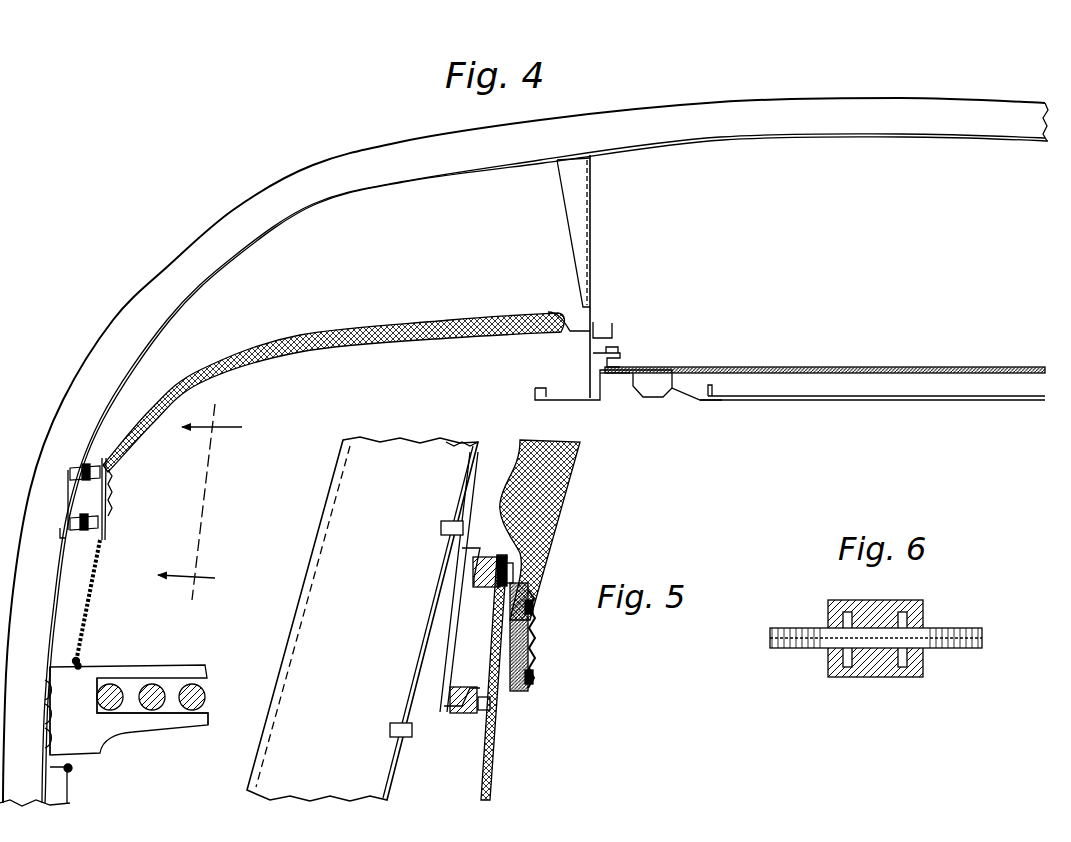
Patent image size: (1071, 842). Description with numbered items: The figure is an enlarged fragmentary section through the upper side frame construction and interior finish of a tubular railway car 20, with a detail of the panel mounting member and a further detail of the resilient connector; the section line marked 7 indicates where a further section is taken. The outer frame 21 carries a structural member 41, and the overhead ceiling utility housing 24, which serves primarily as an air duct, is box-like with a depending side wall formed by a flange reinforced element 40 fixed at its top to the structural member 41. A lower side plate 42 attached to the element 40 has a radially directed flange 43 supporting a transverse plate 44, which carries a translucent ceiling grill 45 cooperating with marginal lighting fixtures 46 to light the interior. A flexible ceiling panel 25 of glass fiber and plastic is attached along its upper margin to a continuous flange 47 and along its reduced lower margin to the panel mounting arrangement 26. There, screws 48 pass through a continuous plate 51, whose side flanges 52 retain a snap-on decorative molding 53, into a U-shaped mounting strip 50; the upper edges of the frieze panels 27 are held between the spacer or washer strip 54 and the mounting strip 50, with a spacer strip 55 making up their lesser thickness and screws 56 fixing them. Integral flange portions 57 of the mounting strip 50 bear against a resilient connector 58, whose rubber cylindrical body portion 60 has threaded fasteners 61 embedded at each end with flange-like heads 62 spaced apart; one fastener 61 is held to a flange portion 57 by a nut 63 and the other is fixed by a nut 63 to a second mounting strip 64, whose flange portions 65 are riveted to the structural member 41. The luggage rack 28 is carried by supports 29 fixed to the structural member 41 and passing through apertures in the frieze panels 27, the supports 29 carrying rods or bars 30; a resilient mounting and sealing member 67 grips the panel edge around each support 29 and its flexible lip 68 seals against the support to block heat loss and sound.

In FIG. 4, the section line 7- 7 is at (204, 502).
In FIG. 4, the tubular railway car 20 is at (813, 100).
In FIG. 4, the outer frame 21 is at (338, 172).
In FIG. 5, the outer frame 21 is at (344, 468).
In FIG. 4, the ceiling utility housing 24 is at (838, 178).
In FIG. 4, the flexible ceiling panel 25 is at (366, 319).
In FIG. 5, the flexible ceiling panel 25 is at (566, 454).
In FIG. 4, the panel mounting arrangement 26 is at (132, 494).
In FIG. 5, the panel mounting arrangement 26 is at (540, 645).
In FIG. 4, the frieze panels 27 is at (92, 592).
In FIG. 5, the frieze panels 27 is at (492, 758).
In FIG. 4, the luggage rack 28 is at (147, 655).
In FIG. 4, the supports 29 is at (190, 665).
In FIG. 4, the rods or bars 30 is at (188, 707).
In FIG. 4, the flange reinforced element 40 is at (592, 228).
In FIG. 4, the structural member 41 is at (667, 142).
In FIG. 5, the structural member 41 is at (472, 442).
In FIG. 4, the lower side plate 42 is at (594, 321).
In FIG. 4, the radially directed flange 43 is at (600, 358).
In FIG. 4, the transverse plate 44 is at (722, 366).
In FIG. 4, the translucent ceiling grill 45 is at (856, 400).
In FIG. 4, the marginal lighting fixtures 46 is at (666, 400).
In FIG. 4, the continuous flange 47 is at (560, 322).
In FIG. 5, the screws 48 is at (500, 588).
In FIG. 4, the mounting strip 50 is at (86, 520).
In FIG. 5, the mounting strip 50 is at (508, 630).
In FIG. 5, the continuous plate 51 is at (536, 633).
In FIG. 5, the side flanges 52 is at (534, 604).
In FIG. 4, the snap-on decorative molding 53 is at (108, 510).
In FIG. 5, the snap-on decorative molding 53 is at (536, 611).
In FIG. 5, the spacer or washer strip 54 is at (520, 598).
In FIG. 5, the spacer strip 55 is at (512, 689).
In FIG. 5, the screws 56 is at (508, 650).
In FIG. 5, the flange portions 57 is at (520, 562).
In FIG. 5, the resilient connector 58 is at (490, 546).
In FIG. 6, the resilient connector 58 is at (936, 606).
In FIG. 4, the cylindrical body portion 60 is at (94, 470).
In FIG. 5, the cylindrical body portion 60 is at (468, 580).
In FIG. 6, the cylindrical body portion 60 is at (877, 600).
In FIG. 6, the threaded fasteners 61 is at (782, 628).
In FIG. 6, the flange-like heads 62 is at (900, 665).
In FIG. 5, the nut 63 is at (527, 568).
In FIG. 4, the second mounting strip 64 is at (86, 472).
In FIG. 5, the second mounting strip 64 is at (457, 602).
In FIG. 5, the flange portions 65 is at (452, 520).
In FIG. 4, the resilient mounting and sealing member 67 is at (79, 657).
In FIG. 4, the flexible lip 68 is at (82, 667).